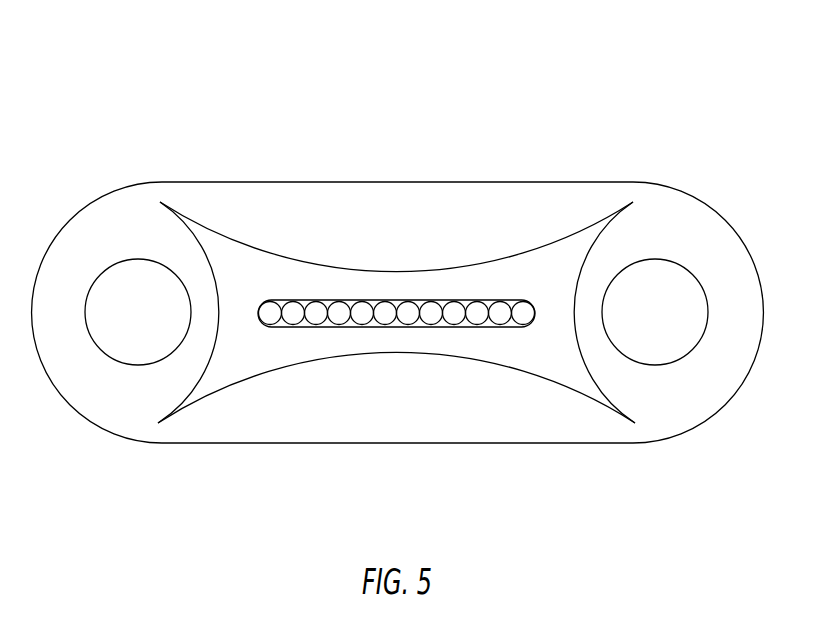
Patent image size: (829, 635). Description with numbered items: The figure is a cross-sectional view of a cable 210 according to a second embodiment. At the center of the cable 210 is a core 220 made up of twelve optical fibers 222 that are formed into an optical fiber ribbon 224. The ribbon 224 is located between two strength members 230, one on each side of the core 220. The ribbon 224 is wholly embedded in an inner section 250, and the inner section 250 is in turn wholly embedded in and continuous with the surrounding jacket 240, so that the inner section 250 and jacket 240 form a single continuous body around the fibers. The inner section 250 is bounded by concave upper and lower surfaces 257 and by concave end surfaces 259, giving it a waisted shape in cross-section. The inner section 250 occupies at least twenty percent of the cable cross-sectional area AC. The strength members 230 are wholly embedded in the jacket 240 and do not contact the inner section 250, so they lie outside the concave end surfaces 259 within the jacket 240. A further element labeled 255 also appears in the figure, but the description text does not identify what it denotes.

The cable 210 is at (88, 113).
The core 220 is at (545, 262).
The optical fibers 222 is at (387, 312).
The optical fiber ribbon 224 is at (467, 327).
The strength members 230 is at (133, 268).
The jacket 240 is at (360, 419).
The inner section 250 is at (397, 272).
The lower curved surface 255 is at (393, 352).
The concave upper and lower surfaces 257 is at (478, 262).
The concave end surfaces 259 is at (192, 378).
The cable cross-sectional area AC is at (178, 430).